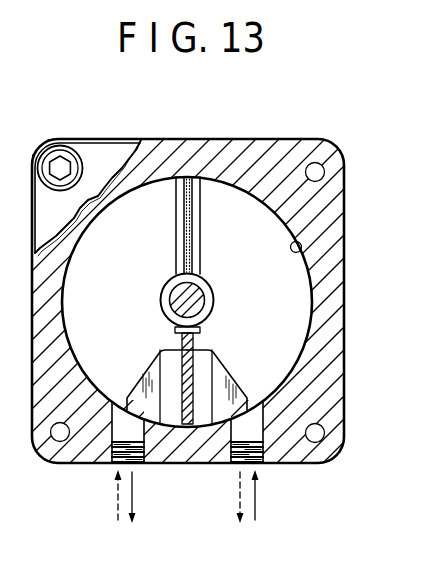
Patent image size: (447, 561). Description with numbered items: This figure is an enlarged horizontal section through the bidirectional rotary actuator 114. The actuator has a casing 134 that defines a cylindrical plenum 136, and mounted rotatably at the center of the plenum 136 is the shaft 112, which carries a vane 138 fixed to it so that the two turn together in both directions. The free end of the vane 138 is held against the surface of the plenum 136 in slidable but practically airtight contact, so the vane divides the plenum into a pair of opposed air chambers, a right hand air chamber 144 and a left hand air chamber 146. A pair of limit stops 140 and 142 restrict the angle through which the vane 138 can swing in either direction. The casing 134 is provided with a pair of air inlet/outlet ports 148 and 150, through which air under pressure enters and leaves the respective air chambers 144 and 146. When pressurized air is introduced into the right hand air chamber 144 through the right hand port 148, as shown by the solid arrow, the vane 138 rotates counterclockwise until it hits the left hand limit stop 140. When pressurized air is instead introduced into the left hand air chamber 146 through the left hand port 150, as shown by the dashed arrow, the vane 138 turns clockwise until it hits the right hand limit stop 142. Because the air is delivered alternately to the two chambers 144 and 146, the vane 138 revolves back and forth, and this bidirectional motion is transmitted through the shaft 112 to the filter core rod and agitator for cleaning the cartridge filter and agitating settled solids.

The shaft 112 is at (198, 292).
The rotary actuator 114 is at (349, 338).
The casing 134 is at (53, 258).
The cylindrical plenum 136 is at (305, 247).
The vane 138 is at (180, 227).
The left hand limit stop 140 is at (143, 385).
The right hand limit stop 142 is at (234, 388).
The right hand air chamber 144 is at (276, 308).
The left hand air chamber 146 is at (141, 299).
The right hand air inlet/outlet port 148 is at (258, 452).
The left hand air inlet/outlet port 150 is at (133, 452).